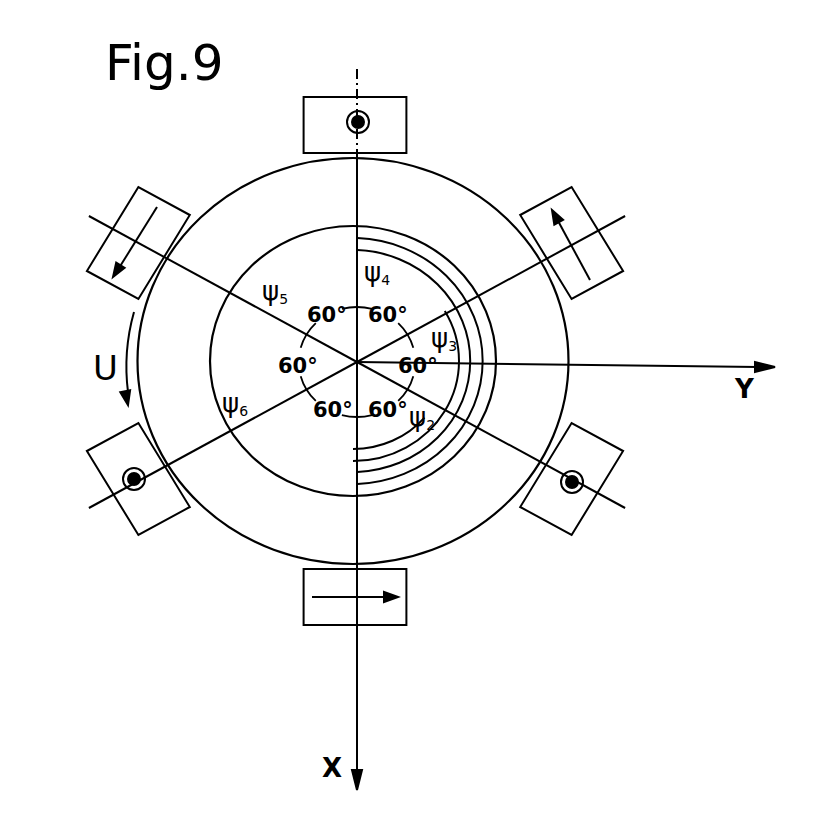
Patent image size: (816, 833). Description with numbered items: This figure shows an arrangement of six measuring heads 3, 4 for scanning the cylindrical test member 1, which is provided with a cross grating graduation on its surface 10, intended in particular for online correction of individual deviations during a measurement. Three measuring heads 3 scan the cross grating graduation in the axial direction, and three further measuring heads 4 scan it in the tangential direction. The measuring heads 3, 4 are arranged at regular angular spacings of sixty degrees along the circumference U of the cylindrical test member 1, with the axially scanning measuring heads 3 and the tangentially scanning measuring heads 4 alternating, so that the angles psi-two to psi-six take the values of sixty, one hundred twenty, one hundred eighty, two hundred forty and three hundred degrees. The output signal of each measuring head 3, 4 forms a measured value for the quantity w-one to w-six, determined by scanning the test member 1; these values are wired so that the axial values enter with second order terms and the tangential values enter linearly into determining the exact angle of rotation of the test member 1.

The cylindrical test member 1 is at (455, 218).
The axially scanning measuring head 3 is at (385, 103).
The tangentially scanning measuring head 4 is at (117, 248).
The surface 10 is at (568, 402).